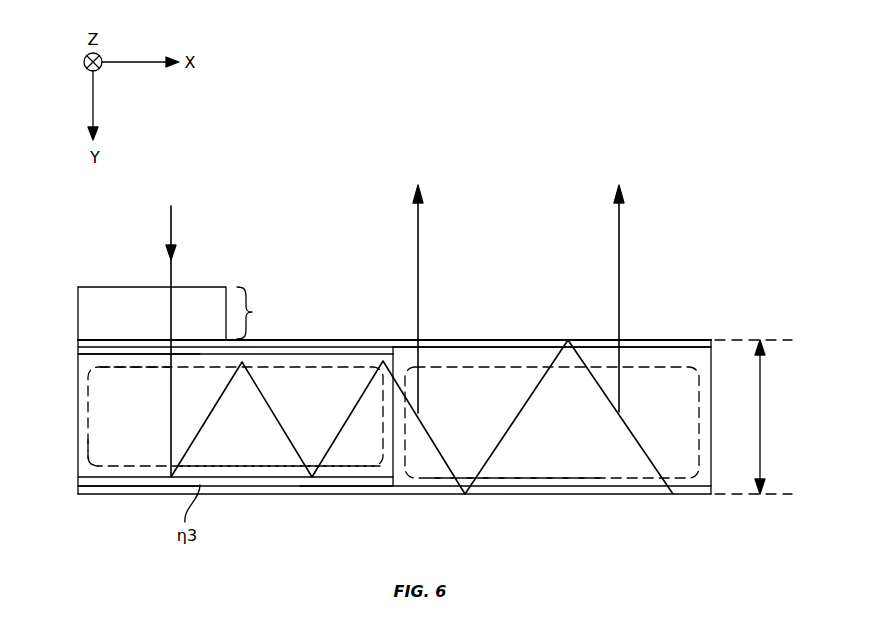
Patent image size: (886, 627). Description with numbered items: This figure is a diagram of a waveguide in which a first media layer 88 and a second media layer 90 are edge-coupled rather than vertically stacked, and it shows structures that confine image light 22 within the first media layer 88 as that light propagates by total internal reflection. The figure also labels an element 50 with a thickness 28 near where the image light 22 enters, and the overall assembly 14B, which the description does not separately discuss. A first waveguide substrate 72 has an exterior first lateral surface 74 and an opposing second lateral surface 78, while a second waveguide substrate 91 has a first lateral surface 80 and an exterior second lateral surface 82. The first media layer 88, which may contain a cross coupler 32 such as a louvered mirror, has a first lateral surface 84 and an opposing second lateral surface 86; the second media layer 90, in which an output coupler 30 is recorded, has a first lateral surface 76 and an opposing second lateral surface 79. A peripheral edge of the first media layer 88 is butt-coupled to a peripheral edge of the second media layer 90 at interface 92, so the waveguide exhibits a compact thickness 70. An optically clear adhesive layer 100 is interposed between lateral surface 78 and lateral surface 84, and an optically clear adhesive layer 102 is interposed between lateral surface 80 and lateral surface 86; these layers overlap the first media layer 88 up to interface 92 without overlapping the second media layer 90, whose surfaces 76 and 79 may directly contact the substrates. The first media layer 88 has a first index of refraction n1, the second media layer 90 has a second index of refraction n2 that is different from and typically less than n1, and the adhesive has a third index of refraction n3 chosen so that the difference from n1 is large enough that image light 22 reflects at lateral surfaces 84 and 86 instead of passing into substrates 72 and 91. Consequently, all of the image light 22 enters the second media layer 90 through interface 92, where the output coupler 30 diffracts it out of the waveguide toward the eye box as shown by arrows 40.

The optical device 14B is at (575, 124).
The image light 22 is at (173, 228).
The thickness of light source 28 is at (257, 313).
The output coupler 30 is at (598, 485).
The cross coupler 32 is at (88, 410).
The arrows 40 is at (420, 243).
The light source 50 is at (78, 321).
The thickness 70 is at (762, 415).
The first waveguide substrate 72 is at (687, 345).
The first lateral surface 74 is at (490, 335).
The first lateral surface 76 is at (474, 355).
The second lateral surface 78 is at (360, 349).
The second lateral surface 79 is at (510, 481).
The first lateral surface 80 is at (134, 491).
The second lateral surface 82 is at (167, 498).
The first lateral surface 84 is at (138, 365).
The second lateral surface 86 is at (96, 470).
The first media layer 88 is at (265, 454).
The second media layer 90 is at (699, 435).
The second waveguide substrate 91 is at (340, 489).
The interface 92 is at (396, 476).
The optically clear adhesive layer 100 is at (82, 357).
The optically clear adhesive layer 102 is at (88, 484).
The first index of refraction n1 is at (240, 425).
The second index of refraction n2 is at (568, 425).
The third index of refraction n3 is at (297, 357).